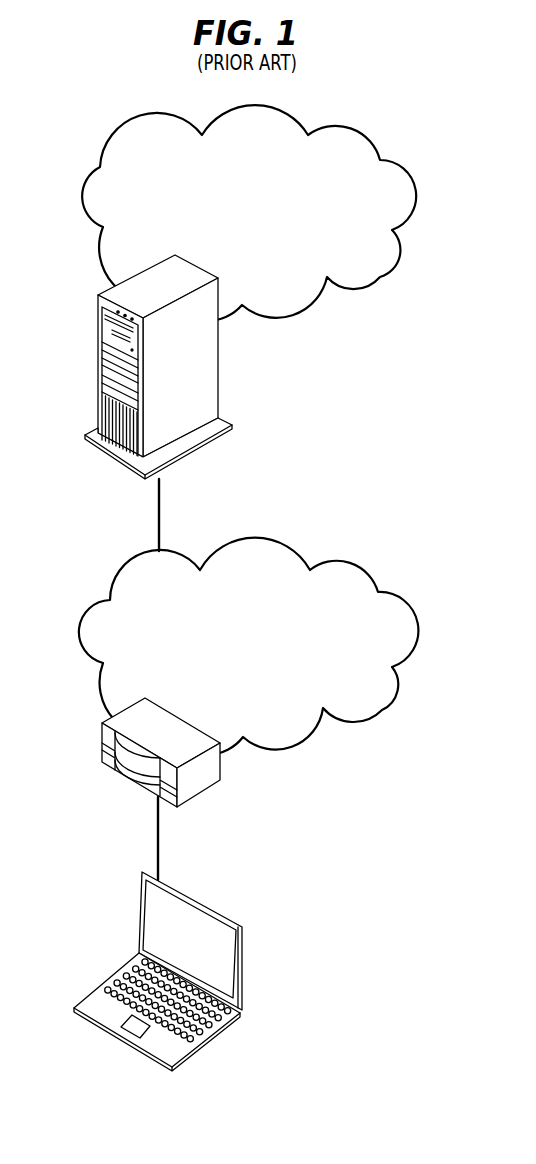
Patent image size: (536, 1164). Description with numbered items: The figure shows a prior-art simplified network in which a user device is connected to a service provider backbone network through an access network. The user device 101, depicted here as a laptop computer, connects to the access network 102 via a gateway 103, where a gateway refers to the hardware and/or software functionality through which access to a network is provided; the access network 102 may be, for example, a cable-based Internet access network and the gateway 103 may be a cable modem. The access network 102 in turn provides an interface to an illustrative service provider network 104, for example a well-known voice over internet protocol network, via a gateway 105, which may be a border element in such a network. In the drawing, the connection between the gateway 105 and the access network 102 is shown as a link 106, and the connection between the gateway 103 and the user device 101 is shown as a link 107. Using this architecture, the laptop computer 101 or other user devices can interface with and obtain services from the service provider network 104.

The user device 101 is at (220, 912).
The access network 102 is at (380, 710).
The gateway 103 is at (203, 792).
The service provider network 104 is at (380, 277).
The gateway 105 is at (98, 373).
The link between server and access network 106 is at (157, 527).
The link between access network and user device 107 is at (156, 837).